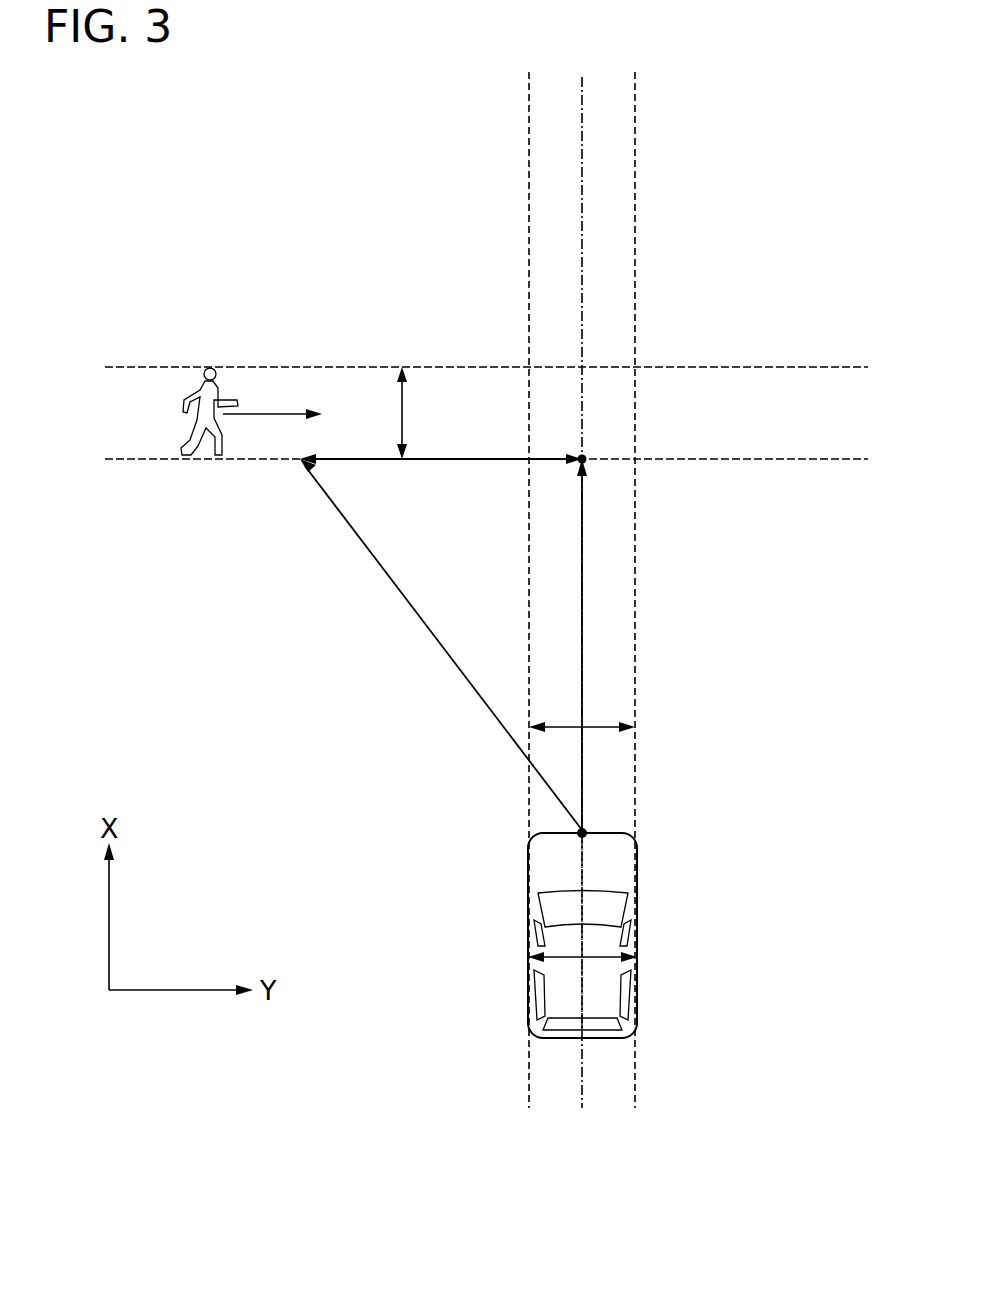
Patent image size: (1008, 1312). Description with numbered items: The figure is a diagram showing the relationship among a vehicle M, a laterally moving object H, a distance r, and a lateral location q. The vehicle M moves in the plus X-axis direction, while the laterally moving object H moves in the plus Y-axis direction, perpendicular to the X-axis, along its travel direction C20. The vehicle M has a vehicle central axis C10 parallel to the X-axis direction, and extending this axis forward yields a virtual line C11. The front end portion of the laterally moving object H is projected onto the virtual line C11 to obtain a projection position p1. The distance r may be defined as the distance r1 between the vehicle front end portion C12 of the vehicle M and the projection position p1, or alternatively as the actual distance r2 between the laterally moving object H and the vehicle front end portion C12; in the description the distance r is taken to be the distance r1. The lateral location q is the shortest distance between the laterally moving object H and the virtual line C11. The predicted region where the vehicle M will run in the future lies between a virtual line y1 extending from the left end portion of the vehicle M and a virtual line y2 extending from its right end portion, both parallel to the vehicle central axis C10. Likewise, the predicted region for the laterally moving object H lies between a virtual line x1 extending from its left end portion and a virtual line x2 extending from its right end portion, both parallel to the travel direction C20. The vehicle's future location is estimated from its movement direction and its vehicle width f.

The virtual line y1 is at (529, 103).
The virtual line y2 is at (635, 102).
The virtual line C11 is at (582, 215).
The virtual line x1 is at (830, 366).
The virtual line x2 is at (828, 462).
The laterally moving object H is at (197, 382).
The travel direction C20 is at (277, 410).
The lateral location q is at (480, 462).
The projection position p1 is at (585, 455).
The distance r1 is at (585, 588).
The actual distance r2 is at (440, 648).
The vehicle M is at (640, 968).
The vehicle front end portion C12 is at (585, 830).
The vehicle central axis C10 is at (582, 868).
The vehicle width f is at (592, 957).